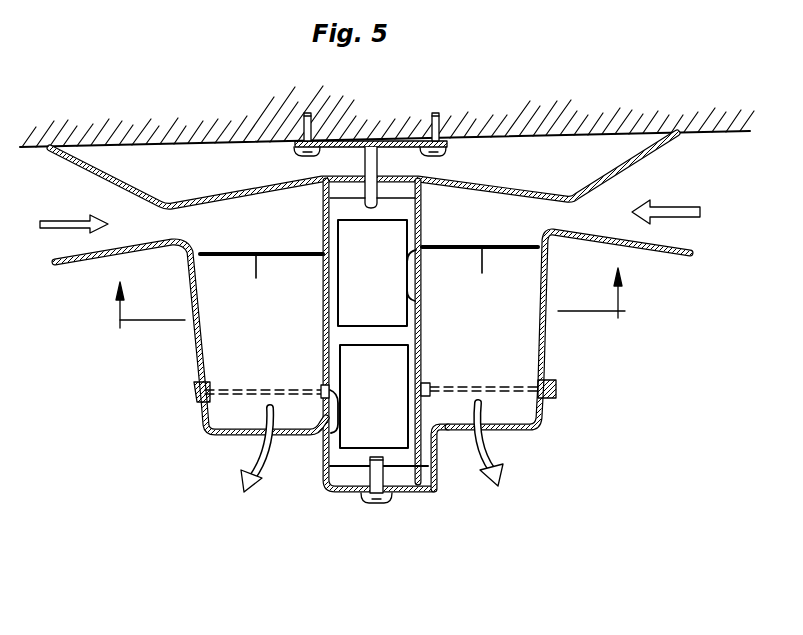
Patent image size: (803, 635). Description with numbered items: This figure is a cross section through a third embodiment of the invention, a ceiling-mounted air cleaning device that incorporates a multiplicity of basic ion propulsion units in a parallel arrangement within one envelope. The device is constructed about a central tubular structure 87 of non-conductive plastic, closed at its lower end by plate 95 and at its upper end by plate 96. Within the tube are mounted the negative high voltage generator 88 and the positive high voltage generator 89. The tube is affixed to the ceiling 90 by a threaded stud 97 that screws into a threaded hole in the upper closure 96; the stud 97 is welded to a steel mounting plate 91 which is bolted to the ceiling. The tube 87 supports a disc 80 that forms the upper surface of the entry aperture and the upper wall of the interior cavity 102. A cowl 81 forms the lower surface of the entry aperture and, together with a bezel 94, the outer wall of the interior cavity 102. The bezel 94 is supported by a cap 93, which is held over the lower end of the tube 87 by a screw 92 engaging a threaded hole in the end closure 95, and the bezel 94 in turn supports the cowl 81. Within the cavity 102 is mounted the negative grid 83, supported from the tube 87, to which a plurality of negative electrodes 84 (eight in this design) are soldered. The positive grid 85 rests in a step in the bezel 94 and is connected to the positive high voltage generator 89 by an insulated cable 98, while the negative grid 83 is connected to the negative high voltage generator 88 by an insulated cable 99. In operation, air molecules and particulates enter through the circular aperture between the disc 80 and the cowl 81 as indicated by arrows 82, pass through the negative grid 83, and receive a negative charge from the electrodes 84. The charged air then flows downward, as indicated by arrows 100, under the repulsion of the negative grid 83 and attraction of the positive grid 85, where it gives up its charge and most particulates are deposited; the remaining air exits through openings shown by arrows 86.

The disc 80 is at (86, 168).
The cowl 81 is at (658, 252).
The arrows 82 is at (687, 204).
The negative grid 83 is at (500, 245).
The negative electrodes 84 is at (255, 269).
The positive grid 85 is at (487, 385).
The arrows 86 is at (258, 450).
The central tubular structure 87 is at (422, 205).
The negative high voltage generator 88 is at (389, 276).
The positive high voltage generator 89 is at (389, 399).
The ceiling 90 is at (567, 126).
The steel mounting plate 91 is at (353, 140).
The screw 92 is at (388, 502).
The cap 93 is at (438, 484).
The bezel 94 is at (541, 417).
The plate 95 is at (352, 477).
The plate 96 is at (343, 191).
The threaded stud 97 is at (379, 160).
The insulated cable 98 is at (320, 436).
The insulated cable 99 is at (412, 272).
The air flow direction arrows 100 is at (370, 312).
The interior cavity 102 is at (292, 328).